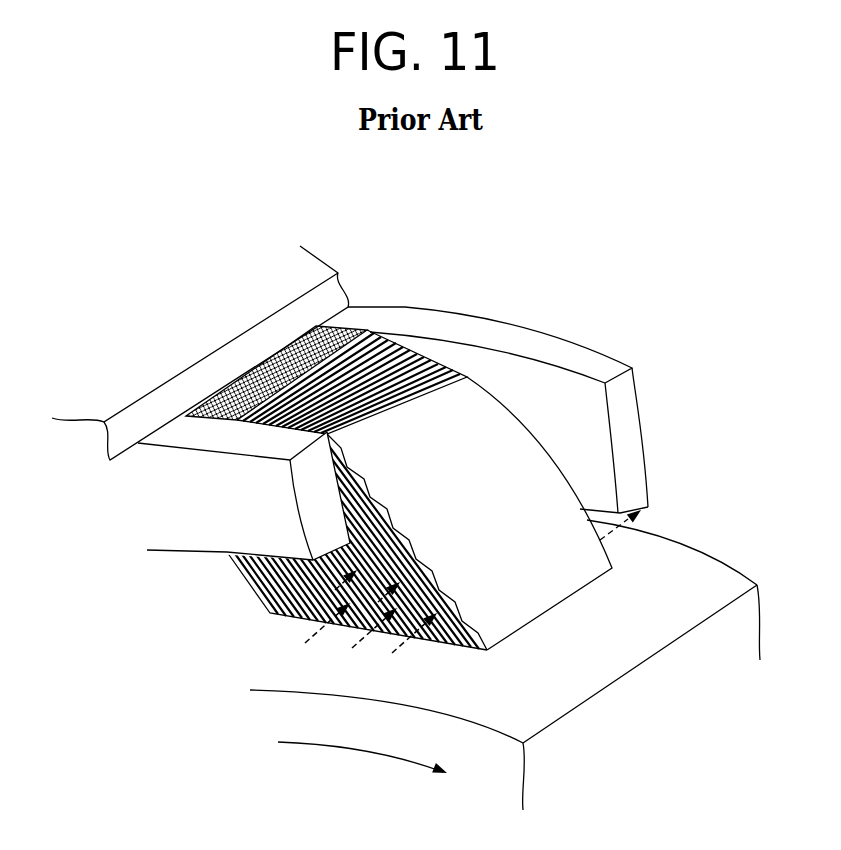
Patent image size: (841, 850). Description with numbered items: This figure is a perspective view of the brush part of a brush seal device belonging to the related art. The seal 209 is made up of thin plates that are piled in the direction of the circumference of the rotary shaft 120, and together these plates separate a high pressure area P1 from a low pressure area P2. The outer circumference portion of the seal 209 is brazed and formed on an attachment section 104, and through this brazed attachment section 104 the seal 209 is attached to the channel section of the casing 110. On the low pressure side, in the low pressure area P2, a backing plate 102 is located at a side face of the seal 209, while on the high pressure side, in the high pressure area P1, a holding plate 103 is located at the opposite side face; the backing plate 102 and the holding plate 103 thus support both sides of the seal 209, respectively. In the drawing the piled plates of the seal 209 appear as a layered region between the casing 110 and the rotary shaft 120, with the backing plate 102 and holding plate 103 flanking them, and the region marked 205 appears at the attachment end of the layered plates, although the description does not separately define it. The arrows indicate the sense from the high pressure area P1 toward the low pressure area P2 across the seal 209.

The casing 110 is at (103, 393).
The insulating gap layer 205 is at (287, 343).
The attachment section 104 is at (370, 352).
The seal 209 is at (503, 440).
The backing plate 102 is at (582, 358).
The rotary shaft 120 is at (688, 577).
The holding plate 103 is at (188, 513).
The high pressure area P1 is at (192, 716).
The low pressure area P2 is at (731, 457).